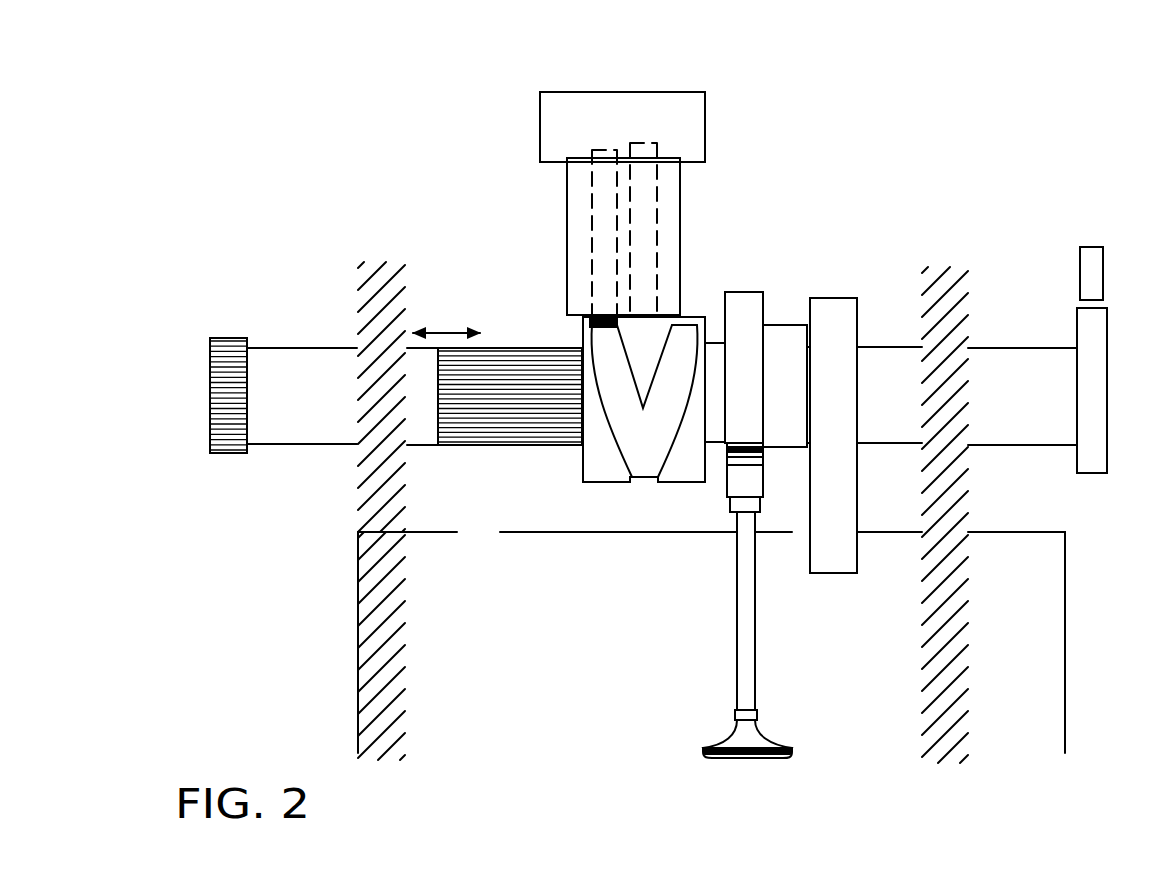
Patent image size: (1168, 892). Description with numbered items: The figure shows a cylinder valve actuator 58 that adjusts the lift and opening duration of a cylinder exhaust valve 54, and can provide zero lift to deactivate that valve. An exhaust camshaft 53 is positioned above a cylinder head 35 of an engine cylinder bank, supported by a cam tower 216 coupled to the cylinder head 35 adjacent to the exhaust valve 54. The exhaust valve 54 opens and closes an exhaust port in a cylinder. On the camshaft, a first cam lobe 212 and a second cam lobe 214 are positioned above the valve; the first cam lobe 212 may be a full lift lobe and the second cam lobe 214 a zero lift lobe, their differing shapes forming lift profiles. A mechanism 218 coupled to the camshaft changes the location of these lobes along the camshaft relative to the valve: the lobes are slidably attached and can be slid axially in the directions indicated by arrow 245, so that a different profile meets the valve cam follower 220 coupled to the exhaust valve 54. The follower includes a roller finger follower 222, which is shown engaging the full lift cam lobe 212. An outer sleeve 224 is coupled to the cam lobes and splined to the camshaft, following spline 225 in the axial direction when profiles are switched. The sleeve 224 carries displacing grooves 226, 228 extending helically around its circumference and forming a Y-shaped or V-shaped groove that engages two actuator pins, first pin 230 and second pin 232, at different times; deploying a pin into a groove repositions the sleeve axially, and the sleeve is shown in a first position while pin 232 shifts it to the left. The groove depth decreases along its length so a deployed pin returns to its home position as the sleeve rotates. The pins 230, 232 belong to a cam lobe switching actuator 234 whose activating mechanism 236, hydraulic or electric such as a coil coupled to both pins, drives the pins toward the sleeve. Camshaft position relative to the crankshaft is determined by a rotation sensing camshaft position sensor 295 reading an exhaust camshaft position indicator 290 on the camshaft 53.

The cylinder head 35 is at (1065, 532).
The exhaust camshaft 53 is at (302, 347).
The exhaust valve 54 is at (735, 565).
The cylinder valve actuator 58 is at (802, 169).
The first cam lobe 212 is at (747, 307).
The second cam lobe 214 is at (770, 330).
The cam tower 216 is at (833, 322).
The mechanism 218 is at (591, 420).
The valve cam follower 220 is at (696, 494).
The roller finger follower 222 is at (745, 470).
The outer sleeve 224 is at (608, 470).
The spline 225 is at (482, 447).
The displacing groove 226 is at (583, 447).
The displacing groove 228 is at (675, 355).
The first pin 230 is at (600, 210).
The second pin 232 is at (640, 197).
The cam lobe switching actuator 234 is at (579, 171).
The activating mechanism 236 is at (607, 108).
The arrow 245 is at (446, 330).
The exhaust camshaft position indicator 290 is at (1107, 380).
The camshaft position sensor 295 is at (1090, 247).